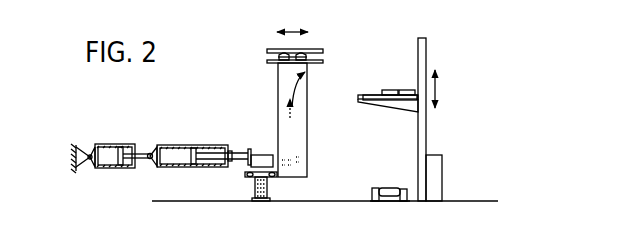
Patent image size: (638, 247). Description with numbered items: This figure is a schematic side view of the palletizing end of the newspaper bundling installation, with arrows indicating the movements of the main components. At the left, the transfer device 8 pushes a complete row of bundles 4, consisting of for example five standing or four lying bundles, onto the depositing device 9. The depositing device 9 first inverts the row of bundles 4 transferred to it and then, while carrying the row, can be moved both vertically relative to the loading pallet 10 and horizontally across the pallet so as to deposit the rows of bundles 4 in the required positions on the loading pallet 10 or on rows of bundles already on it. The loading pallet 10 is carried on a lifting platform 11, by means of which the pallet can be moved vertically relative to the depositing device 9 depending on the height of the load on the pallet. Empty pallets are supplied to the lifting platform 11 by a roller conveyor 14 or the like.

The transfer device 8 is at (191, 137).
The bundles 4 is at (258, 153).
The depositing device 9 is at (275, 99).
The loading pallet 10 is at (357, 92).
The lifting platform 11 is at (431, 141).
The roller conveyor 14 is at (376, 187).